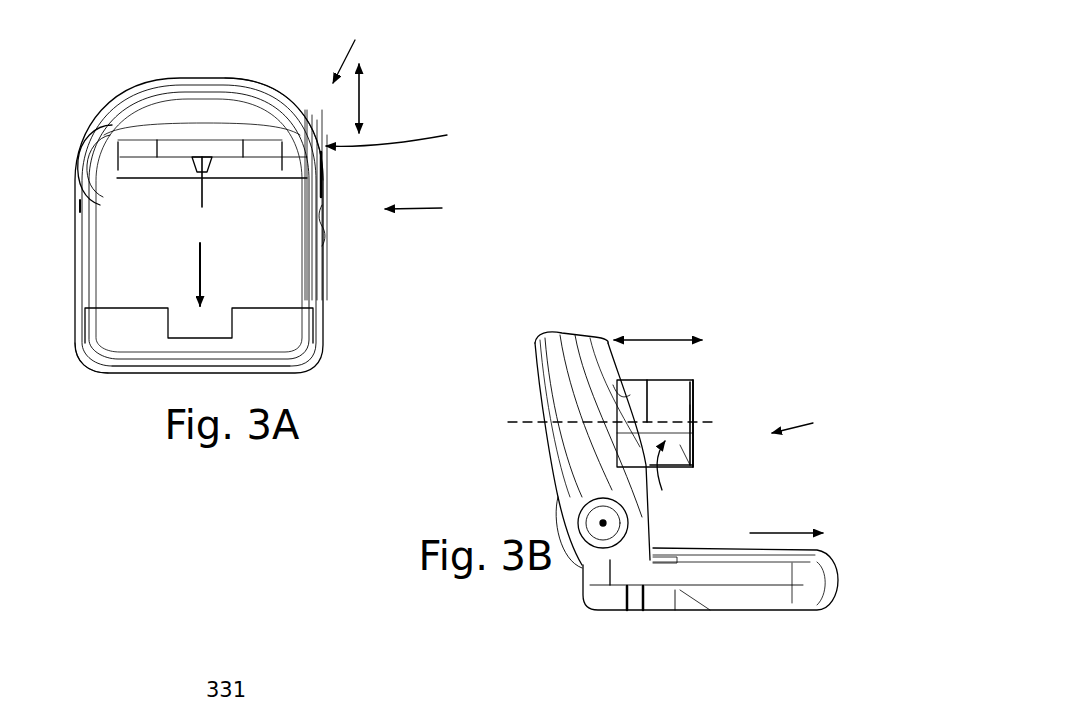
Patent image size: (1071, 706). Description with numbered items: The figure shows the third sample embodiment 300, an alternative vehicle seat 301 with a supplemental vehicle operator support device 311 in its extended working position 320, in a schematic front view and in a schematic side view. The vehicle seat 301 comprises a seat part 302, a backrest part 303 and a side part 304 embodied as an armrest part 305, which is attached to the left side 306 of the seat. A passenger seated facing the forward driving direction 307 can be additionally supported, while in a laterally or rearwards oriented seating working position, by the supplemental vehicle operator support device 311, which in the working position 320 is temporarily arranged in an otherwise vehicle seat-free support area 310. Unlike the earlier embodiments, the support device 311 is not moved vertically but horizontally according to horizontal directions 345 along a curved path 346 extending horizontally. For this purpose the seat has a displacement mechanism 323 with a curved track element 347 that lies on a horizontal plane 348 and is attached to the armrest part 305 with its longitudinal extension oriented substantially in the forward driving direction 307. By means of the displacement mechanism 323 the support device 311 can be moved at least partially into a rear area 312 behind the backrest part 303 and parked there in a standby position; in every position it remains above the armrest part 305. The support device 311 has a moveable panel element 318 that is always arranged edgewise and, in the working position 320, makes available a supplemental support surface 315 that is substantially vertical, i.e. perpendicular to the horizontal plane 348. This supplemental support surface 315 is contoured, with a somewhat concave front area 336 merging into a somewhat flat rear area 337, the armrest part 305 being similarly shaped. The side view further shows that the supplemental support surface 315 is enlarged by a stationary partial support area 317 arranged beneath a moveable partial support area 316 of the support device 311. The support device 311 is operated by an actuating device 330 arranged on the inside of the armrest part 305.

In FIG. 3B, the third sample embodiment 300 is at (622, 126).
In FIG. 3A, the vehicle seat 301 is at (86, 378).
In FIG. 3B, the vehicle seat 301 is at (703, 236).
In FIG. 3A, the seat part 302 is at (134, 351).
In FIG. 3B, the seat part 302 is at (753, 580).
In FIG. 3A, the backrest part 303 is at (112, 128).
In FIG. 3B, the backrest part 303 is at (542, 353).
In FIG. 3A, the side part 304 is at (435, 206).
In FIG. 3B, the side part 304 is at (812, 419).
In FIG. 3A, the armrest part 305 is at (326, 232).
In FIG. 3B, the armrest part 305 is at (685, 457).
In FIG. 3A, the left side 306 is at (490, 249).
In FIG. 3A, the forward driving direction 307 is at (198, 277).
In FIG. 3B, the forward driving direction 307 is at (783, 533).
In FIG. 3A, the support area 310 is at (300, 245).
In FIG. 3A, the supplemental vehicle operator support device 311 is at (332, 222).
In FIG. 3B, the supplemental vehicle operator support device 311 is at (696, 391).
In FIG. 3A, the rear area 312 is at (205, 55).
In FIG. 3A, the supplemental support surface 315 is at (295, 205).
In FIG. 3B, the supplemental support surface 315 is at (647, 396).
In FIG. 3B, the moveable partial support area 316 is at (680, 393).
In FIG. 3B, the stationary partial support area 317 is at (677, 476).
In FIG. 3A, the moveable panel element 318 is at (322, 204).
In FIG. 3B, the moveable panel element 318 is at (678, 393).
In FIG. 3A, the working position 320 is at (450, 172).
In FIG. 3B, the working position 320 is at (750, 352).
In FIG. 3A, the displacement mechanism 323 is at (407, 134).
In FIG. 3B, the actuating device 330 is at (680, 438).
In FIG. 3A, the front area 336 is at (312, 222).
In FIG. 3B, the front area 336 is at (685, 412).
In FIG. 3A, the rear area of the supplemental support surface 337 is at (305, 173).
In FIG. 3B, the rear area of the supplemental support surface 337 is at (628, 392).
In FIG. 3A, the horizontal directions 345 is at (362, 110).
In FIG. 3B, the horizontal directions 345 is at (662, 337).
In FIG. 3A, the curved path 346 is at (355, 49).
In FIG. 3A, the curved track element 347 is at (303, 97).
In FIG. 3B, the horizontal plane 348 is at (508, 421).